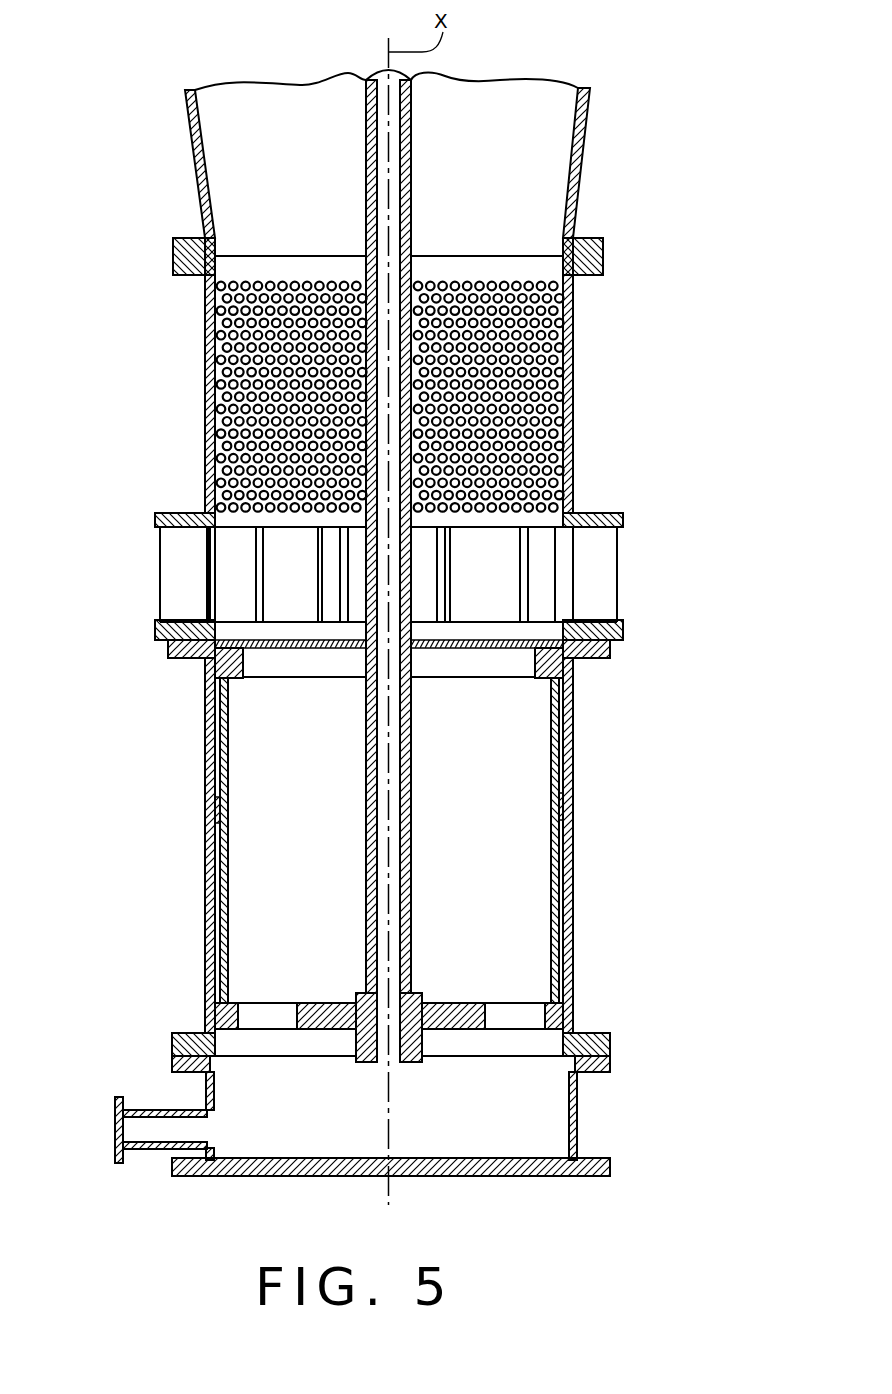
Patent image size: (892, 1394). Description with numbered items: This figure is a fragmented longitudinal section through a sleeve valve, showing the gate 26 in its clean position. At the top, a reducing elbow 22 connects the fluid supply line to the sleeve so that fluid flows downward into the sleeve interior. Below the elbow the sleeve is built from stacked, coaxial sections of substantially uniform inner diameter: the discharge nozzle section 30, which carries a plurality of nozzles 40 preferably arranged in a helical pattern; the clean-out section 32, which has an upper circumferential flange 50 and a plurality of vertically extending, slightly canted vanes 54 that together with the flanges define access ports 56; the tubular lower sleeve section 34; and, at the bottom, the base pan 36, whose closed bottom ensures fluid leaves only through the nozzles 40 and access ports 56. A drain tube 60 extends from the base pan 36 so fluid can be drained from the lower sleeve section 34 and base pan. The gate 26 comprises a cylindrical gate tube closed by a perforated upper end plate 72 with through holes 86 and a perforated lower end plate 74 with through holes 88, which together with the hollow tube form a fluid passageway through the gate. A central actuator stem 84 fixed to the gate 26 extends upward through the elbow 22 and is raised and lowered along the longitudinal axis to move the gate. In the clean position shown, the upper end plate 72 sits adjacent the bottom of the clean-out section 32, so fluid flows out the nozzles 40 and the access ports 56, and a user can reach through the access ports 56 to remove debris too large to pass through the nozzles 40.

The reducing elbow 22 is at (592, 137).
The central actuator stem 84 is at (366, 112).
The discharge nozzle section 30 is at (590, 417).
The nozzles 40 is at (572, 335).
The upper circumferential flange 50 is at (614, 507).
The access ports 56 is at (177, 528).
The clean-out section 32 is at (628, 603).
The vanes 54 is at (317, 588).
The perforated upper end plate 72 is at (247, 648).
The lower sleeve section 34 is at (574, 857).
The gate 26 is at (343, 1037).
The perforated lower end plate 74 is at (326, 1002).
The through holes 88 is at (240, 1017).
The through holes 86 is at (487, 1011).
The base pan 36 is at (594, 1132).
The drain tube 60 is at (143, 1110).